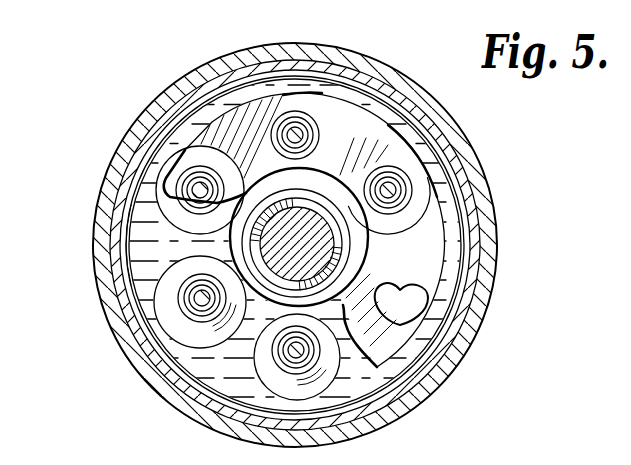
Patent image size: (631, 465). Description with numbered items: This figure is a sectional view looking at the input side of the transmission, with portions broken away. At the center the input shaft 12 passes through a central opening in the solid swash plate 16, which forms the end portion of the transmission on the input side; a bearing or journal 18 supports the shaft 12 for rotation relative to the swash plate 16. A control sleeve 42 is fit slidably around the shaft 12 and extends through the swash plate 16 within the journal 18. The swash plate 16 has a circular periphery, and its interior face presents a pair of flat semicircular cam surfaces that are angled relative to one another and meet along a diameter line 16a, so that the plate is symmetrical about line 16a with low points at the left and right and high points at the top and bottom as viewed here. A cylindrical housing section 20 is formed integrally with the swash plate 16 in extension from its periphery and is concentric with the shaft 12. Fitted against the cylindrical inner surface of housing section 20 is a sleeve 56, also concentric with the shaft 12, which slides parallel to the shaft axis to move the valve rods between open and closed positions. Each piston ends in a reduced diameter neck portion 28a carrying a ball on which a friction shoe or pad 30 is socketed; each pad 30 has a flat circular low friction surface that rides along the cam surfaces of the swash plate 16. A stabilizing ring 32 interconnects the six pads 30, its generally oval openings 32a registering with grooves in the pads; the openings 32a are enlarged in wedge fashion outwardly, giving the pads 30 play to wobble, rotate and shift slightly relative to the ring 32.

The input shaft 12 is at (292, 270).
The swash plate 16 is at (423, 340).
The diameter line 16a is at (140, 242).
The bearing or journal 18 is at (293, 195).
The cylindrical housing section 20 is at (488, 277).
The reduced diameter neck portion 28a is at (198, 292).
The friction shoe or pad 30 is at (303, 92).
The stabilizing ring 32 is at (430, 230).
The oval shaped openings 32a is at (398, 290).
The control sleeve 42 is at (277, 212).
The sleeve 56 is at (465, 308).